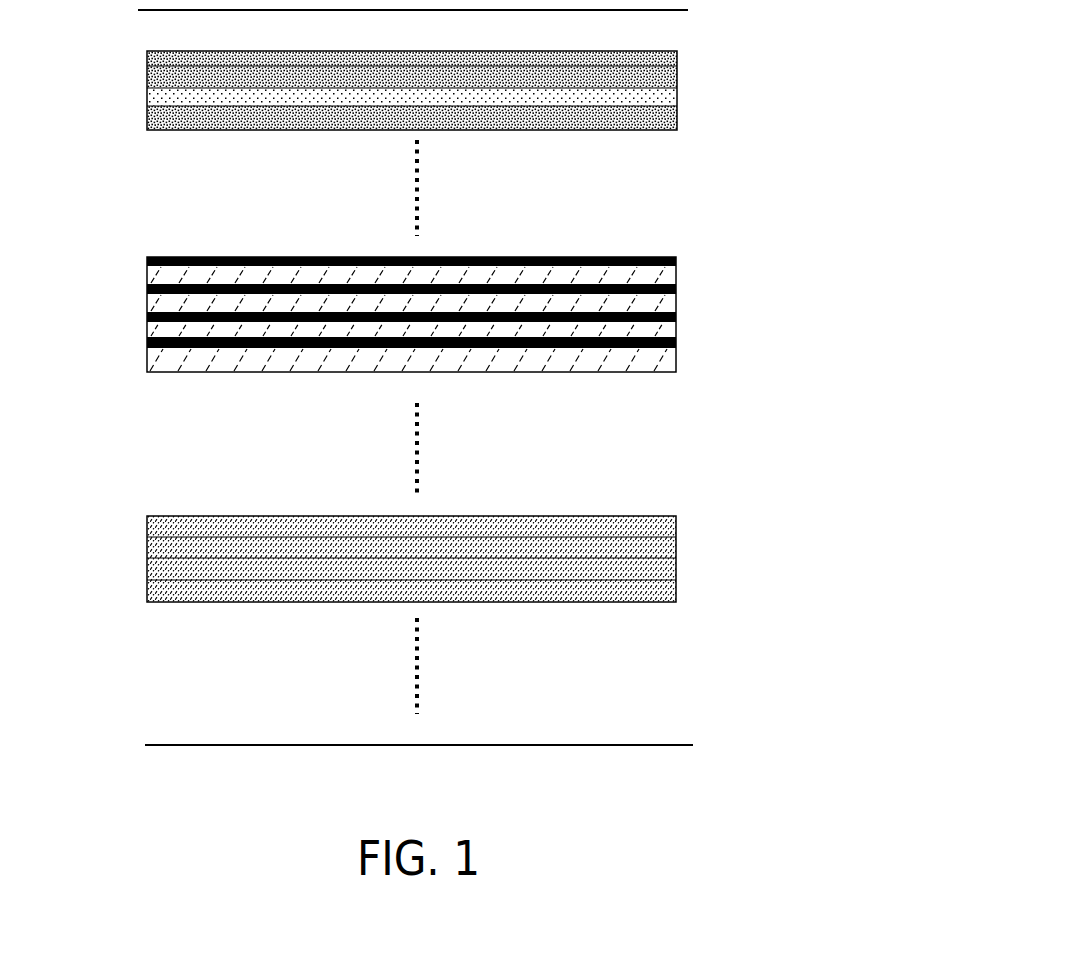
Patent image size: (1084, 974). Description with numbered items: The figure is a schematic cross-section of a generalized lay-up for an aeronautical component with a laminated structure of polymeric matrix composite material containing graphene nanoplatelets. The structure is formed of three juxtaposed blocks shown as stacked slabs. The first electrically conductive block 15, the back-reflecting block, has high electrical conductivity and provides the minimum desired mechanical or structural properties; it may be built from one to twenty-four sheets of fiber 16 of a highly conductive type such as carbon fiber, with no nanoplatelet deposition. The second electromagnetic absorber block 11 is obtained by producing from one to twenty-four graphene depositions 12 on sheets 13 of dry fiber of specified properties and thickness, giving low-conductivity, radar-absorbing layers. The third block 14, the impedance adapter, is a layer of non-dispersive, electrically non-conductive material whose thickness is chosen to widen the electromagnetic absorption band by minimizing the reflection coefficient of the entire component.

The second electromagnetic absorber block 11 is at (130, 257).
The graphene depositions 12 is at (676, 262).
The sheets of dry fiber 13 is at (668, 78).
The third block 14 is at (135, 50).
The first electrically conductive block 15 is at (137, 516).
The sheets of fiber 16 is at (668, 525).